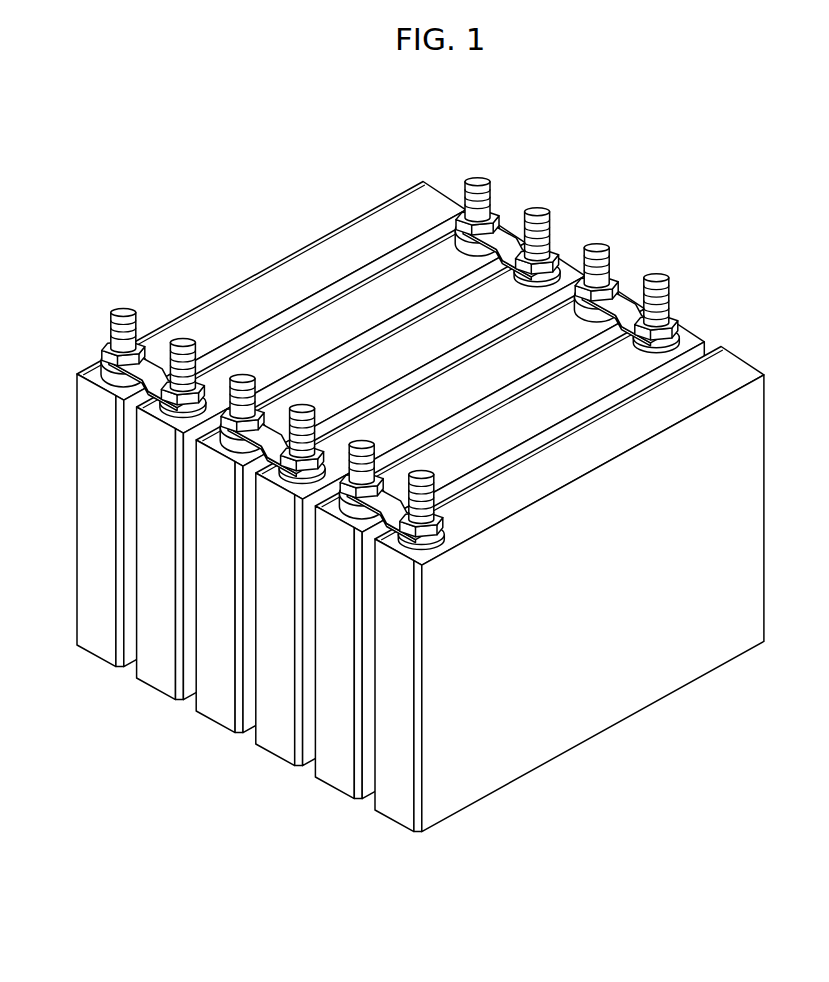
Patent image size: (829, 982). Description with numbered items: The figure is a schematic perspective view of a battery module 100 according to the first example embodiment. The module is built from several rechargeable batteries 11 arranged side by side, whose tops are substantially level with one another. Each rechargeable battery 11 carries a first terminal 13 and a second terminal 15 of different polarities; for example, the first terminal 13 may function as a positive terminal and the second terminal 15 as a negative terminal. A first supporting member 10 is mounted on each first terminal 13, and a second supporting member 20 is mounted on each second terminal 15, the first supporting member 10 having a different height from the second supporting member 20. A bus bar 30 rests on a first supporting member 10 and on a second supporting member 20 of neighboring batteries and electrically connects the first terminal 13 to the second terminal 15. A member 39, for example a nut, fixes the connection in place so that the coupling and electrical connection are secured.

The battery module 100 is at (312, 176).
The first supporting member 10 is at (338, 524).
The rechargeable battery 11 is at (398, 813).
The first terminal 13 is at (127, 312).
The second terminal 15 is at (186, 343).
The second supporting member 20 is at (437, 548).
The bus bar 30 is at (384, 522).
The member 39 is at (442, 522).